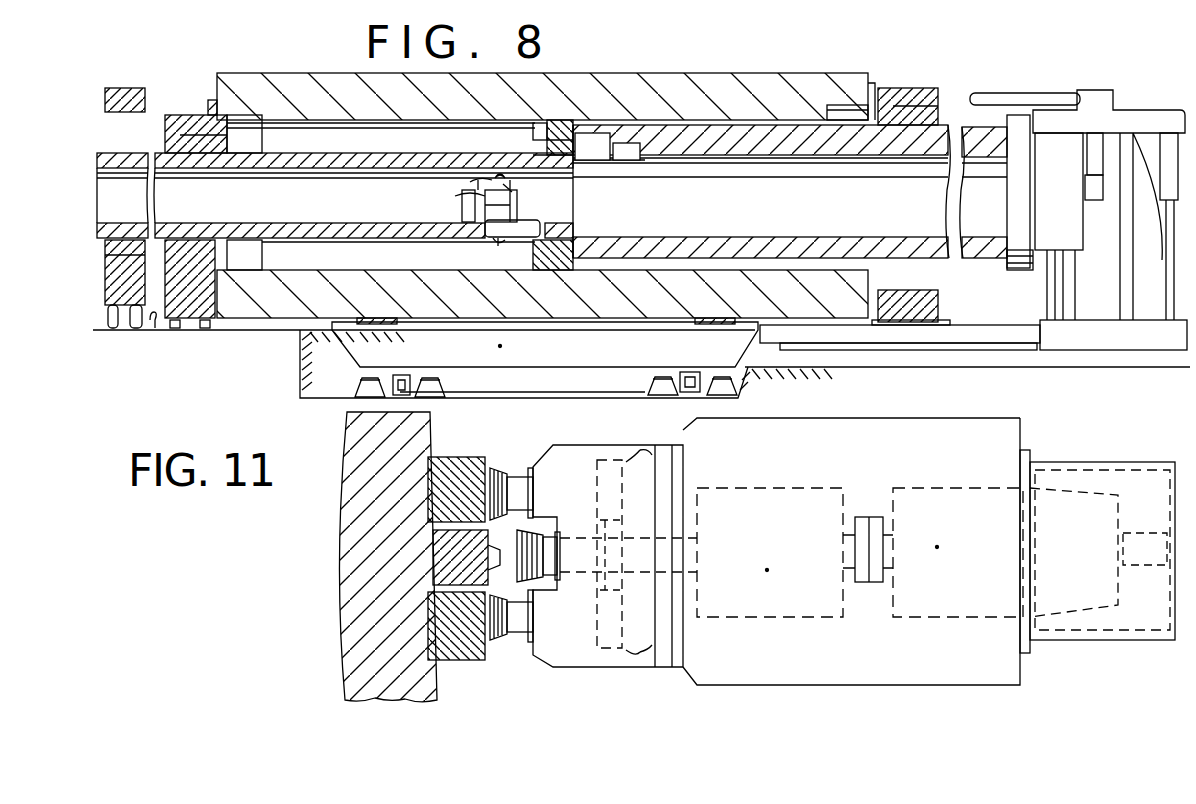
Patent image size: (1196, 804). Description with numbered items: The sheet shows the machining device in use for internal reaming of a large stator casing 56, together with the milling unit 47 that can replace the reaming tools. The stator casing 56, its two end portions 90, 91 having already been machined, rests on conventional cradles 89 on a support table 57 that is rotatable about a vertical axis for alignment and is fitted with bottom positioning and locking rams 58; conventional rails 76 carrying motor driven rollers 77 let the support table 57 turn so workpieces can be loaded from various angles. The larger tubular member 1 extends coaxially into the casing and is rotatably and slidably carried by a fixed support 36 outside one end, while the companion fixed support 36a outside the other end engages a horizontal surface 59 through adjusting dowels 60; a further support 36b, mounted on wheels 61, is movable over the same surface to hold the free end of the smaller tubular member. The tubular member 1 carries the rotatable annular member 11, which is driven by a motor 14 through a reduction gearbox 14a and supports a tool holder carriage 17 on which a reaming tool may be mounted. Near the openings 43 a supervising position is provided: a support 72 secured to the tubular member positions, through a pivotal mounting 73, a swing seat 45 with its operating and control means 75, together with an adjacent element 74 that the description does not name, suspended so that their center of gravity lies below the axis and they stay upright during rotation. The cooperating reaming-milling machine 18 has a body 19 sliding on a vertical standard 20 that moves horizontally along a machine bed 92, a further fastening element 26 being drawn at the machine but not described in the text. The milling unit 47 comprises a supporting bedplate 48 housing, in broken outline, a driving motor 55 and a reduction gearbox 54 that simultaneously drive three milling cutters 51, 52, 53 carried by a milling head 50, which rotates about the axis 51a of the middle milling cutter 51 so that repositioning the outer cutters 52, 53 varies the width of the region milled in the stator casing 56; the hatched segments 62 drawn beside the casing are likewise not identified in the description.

In FIG. 8, the larger tubular member 1 is at (378, 238).
In FIG. 8, the rotatable annular member 11 is at (555, 125).
In FIG. 8, the motor 14 is at (630, 162).
In FIG. 8, the reduction gearbox 14a is at (593, 162).
In FIG. 8, the tool holder carriage 17 is at (522, 128).
In FIG. 8, the reaming-milling machine 18 is at (1131, 102).
In FIG. 8, the body 19 is at (1070, 235).
In FIG. 8, the vertical standard 20 is at (1103, 300).
In FIG. 8, the nut 26 is at (1018, 272).
In FIG. 8, the fixed support 36 is at (905, 90).
In FIG. 8, the fixed support 36a is at (185, 114).
In FIG. 8, the further support 36b is at (118, 114).
In FIG. 8, the openings 43 is at (500, 244).
In FIG. 8, the swing seat 45 is at (470, 181).
In FIG. 11, the milling unit 47 is at (800, 688).
In FIG. 11, the supporting bedplate 48 is at (843, 430).
In FIG. 11, the milling head 50 is at (573, 655).
In FIG. 11, the middle milling cutter 51 is at (550, 532).
In FIG. 11, the axis of the middle milling cutter 51a is at (680, 498).
In FIG. 11, the outer milling cutter 52 is at (500, 468).
In FIG. 11, the outer milling cutter 53 is at (495, 640).
In FIG. 11, the reduction gearbox 54 is at (770, 552).
In FIG. 11, the driving motor 55 is at (958, 552).
In FIG. 8, the stator casing 56 is at (710, 90).
In FIG. 11, the stator casing 56 is at (330, 683).
In FIG. 8, the support table 57 is at (545, 344).
In FIG. 8, the positioning and locking rams 58 is at (690, 372).
In FIG. 8, the horizontal surface 59 is at (152, 330).
In FIG. 8, the adjusting dowels 60 is at (205, 330).
In FIG. 8, the wheels 61 is at (135, 330).
In FIG. 11, the rack segments 62 is at (445, 622).
In FIG. 8, the support 72 is at (460, 215).
In FIG. 8, the pivotal mounting 73 is at (462, 194).
In FIG. 8, the footrest block 74 is at (488, 238).
In FIG. 8, the operating and control means 75 is at (520, 204).
In FIG. 8, the rails 76 is at (380, 368).
In FIG. 8, the motor driven rollers 77 is at (428, 378).
In FIG. 8, the cradles 89 is at (392, 322).
In FIG. 8, the end portion of the stator casing 90 is at (840, 105).
In FIG. 8, the end portion of the stator casing 91 is at (243, 115).
In FIG. 8, the machine bed 92 is at (938, 368).